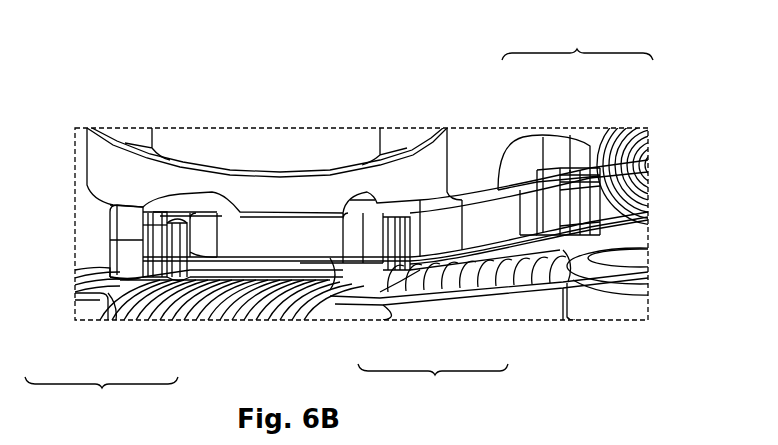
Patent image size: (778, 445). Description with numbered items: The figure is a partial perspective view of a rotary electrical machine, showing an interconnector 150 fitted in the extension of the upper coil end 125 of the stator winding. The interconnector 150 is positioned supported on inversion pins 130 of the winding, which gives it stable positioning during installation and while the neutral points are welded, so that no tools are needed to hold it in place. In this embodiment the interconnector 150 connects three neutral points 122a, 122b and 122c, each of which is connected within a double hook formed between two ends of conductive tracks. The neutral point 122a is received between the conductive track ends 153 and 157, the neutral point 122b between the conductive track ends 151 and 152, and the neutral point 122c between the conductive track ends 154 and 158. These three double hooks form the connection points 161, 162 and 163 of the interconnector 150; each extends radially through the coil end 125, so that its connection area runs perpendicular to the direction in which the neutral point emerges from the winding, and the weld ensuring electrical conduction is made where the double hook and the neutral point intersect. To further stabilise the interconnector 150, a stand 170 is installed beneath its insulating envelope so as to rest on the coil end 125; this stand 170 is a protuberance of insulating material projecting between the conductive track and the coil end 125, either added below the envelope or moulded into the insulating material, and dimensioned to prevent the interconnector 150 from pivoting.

The connection point 161 is at (577, 37).
The conductive track end 154 is at (548, 175).
The neutral point 122c is at (571, 198).
The conductive track end 158 is at (622, 150).
The stand 170 is at (85, 257).
The conductive track end 157 is at (112, 316).
The neutral point 122a is at (150, 305).
The conductive track end 153 is at (175, 315).
The connection point 163 is at (101, 394).
The interconnector 150 is at (243, 238).
The upper coil end 125 is at (237, 305).
The inversion pin 130 is at (317, 262).
The conductive track end 151 is at (373, 300).
The neutral point 122b is at (407, 300).
The conductive track end 152 is at (447, 300).
The connection point 162 is at (433, 379).